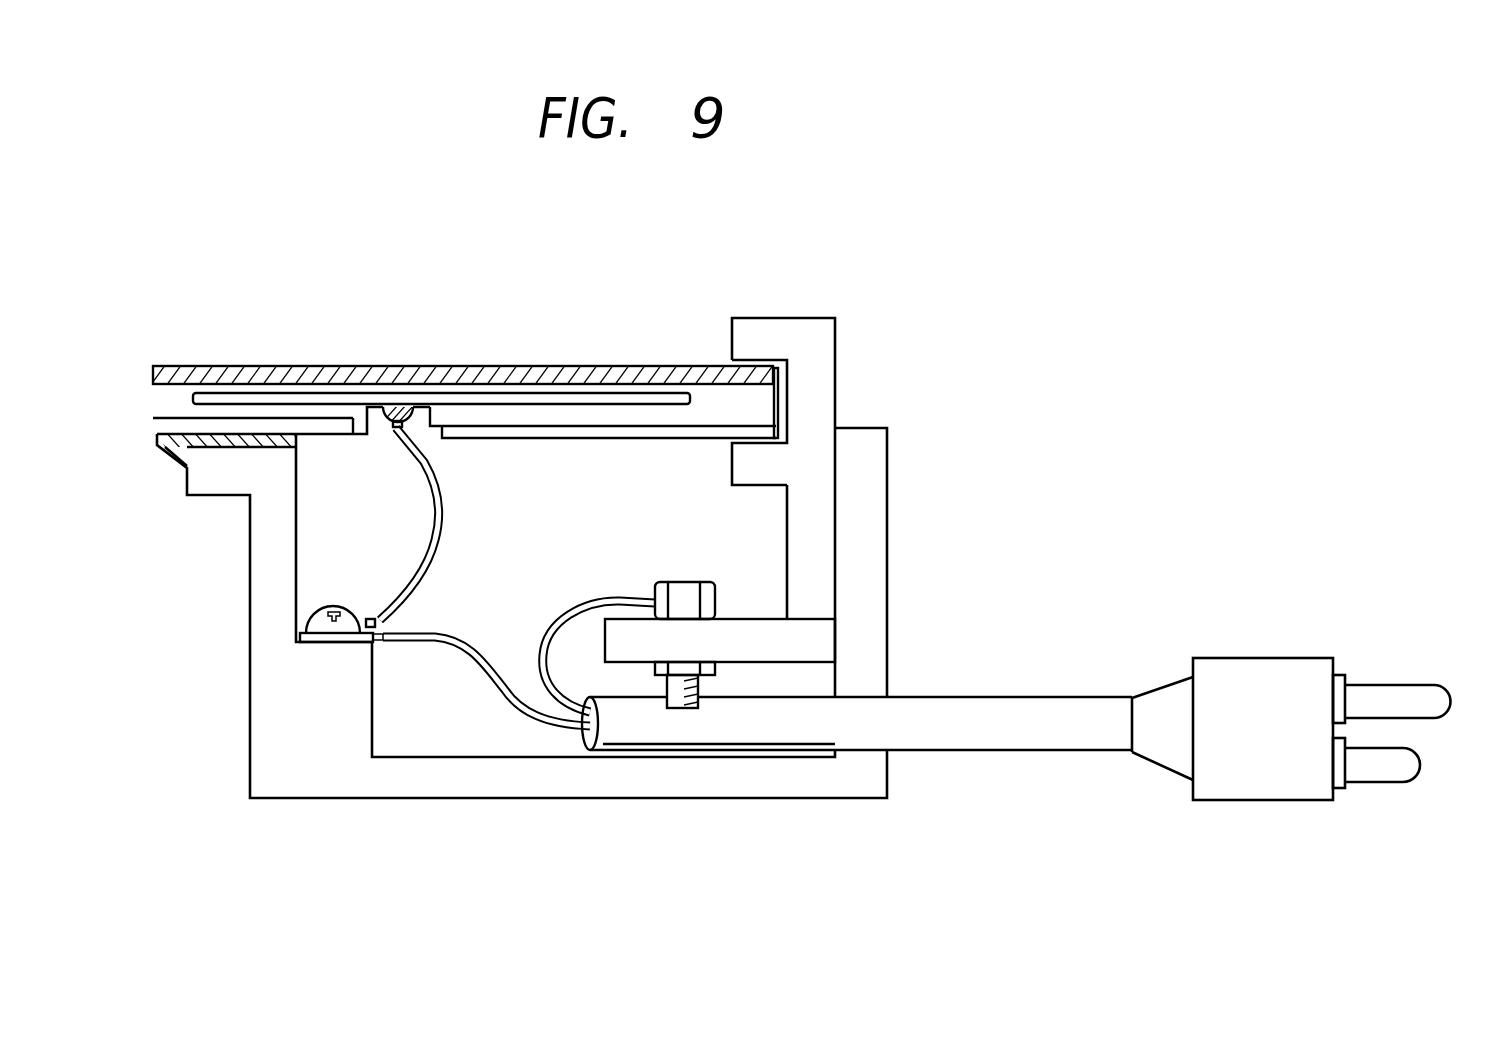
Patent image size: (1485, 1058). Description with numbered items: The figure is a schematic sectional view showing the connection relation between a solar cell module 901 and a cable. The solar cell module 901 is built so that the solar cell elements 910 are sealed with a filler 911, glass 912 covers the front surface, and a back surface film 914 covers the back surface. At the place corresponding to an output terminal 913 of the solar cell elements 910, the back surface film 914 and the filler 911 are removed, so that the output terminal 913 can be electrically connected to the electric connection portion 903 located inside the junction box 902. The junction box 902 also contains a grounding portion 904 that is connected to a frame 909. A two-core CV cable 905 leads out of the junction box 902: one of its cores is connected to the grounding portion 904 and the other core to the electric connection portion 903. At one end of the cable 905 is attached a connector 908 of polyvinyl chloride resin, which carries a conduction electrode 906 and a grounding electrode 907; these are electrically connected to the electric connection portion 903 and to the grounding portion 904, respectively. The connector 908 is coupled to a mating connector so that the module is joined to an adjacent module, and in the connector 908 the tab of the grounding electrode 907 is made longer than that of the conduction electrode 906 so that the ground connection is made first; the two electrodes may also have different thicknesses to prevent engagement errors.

The solar cell module 901 is at (345, 257).
The junction box 902 is at (880, 436).
The electric connection portion 903 is at (317, 641).
The grounding portion 904 is at (702, 634).
The two-core CV cable 905 is at (993, 753).
The conduction electrode 906 is at (1398, 776).
The grounding electrode 907 is at (1432, 690).
The connector 908 is at (1225, 790).
The frame 909 is at (797, 325).
The solar cell elements 910 is at (443, 395).
The filler 911 is at (182, 395).
The glass 912 is at (658, 365).
The output terminal 913 is at (393, 415).
The back surface film 914 is at (517, 438).